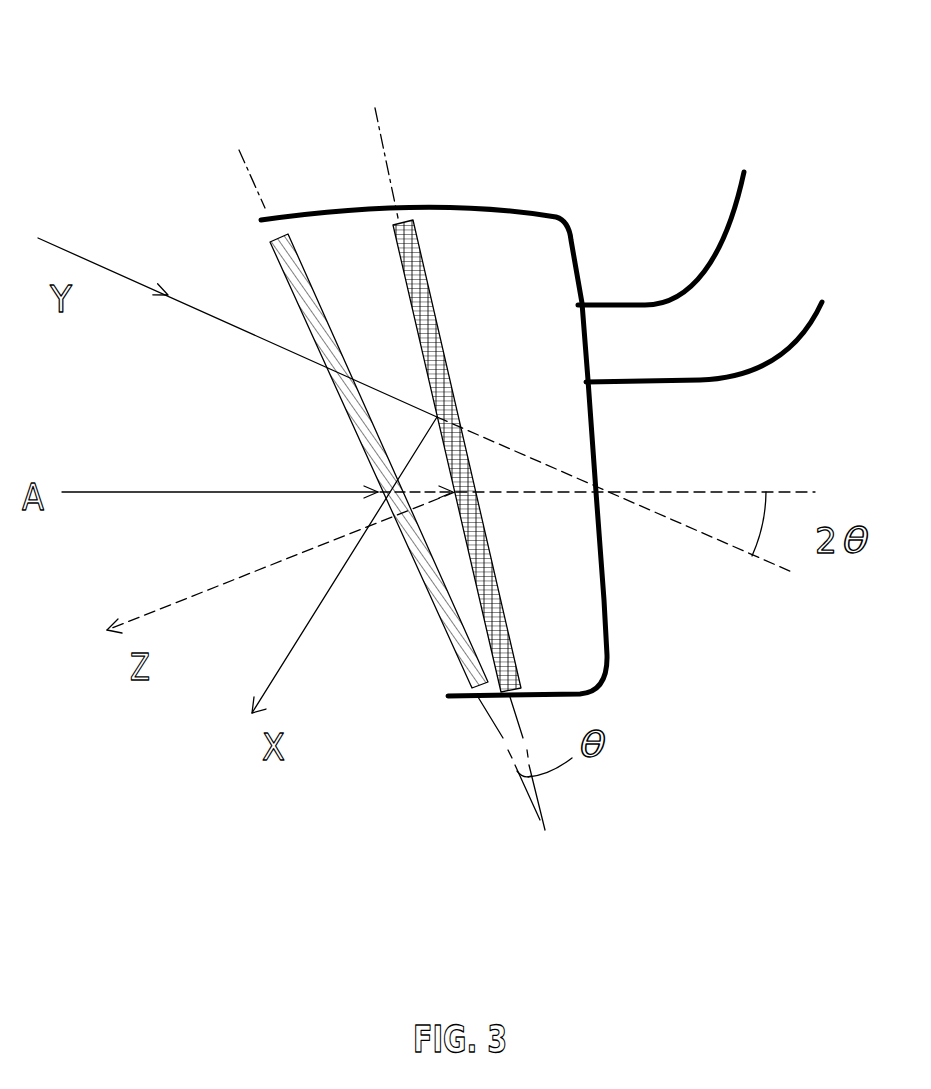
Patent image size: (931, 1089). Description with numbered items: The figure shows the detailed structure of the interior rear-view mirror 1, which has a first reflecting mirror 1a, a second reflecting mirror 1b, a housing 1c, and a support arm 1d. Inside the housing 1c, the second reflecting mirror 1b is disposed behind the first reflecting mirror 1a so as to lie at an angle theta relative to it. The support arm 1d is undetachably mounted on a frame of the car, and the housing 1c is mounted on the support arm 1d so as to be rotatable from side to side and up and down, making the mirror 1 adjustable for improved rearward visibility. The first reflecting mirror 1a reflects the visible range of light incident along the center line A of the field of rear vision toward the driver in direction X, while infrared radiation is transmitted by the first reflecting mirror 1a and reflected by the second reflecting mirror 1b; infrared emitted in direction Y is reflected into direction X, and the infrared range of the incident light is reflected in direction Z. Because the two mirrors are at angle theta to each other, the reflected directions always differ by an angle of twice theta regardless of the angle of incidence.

The mirror 1 is at (215, 123).
The first reflecting mirror 1a is at (297, 248).
The second reflecting mirror 1b is at (420, 232).
The housing 1c is at (523, 214).
The support arm 1d is at (628, 302).